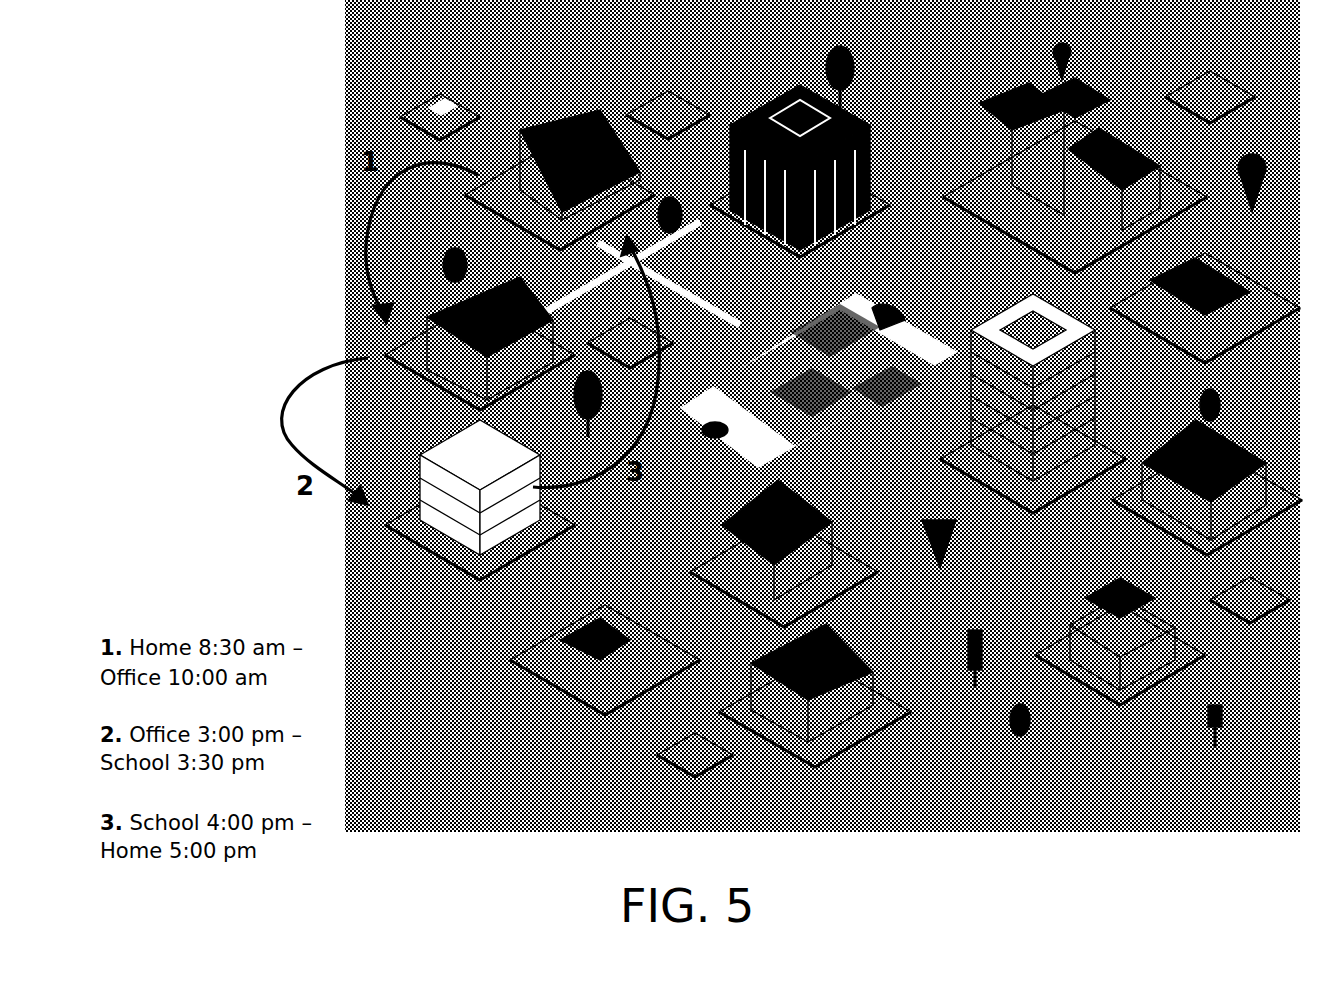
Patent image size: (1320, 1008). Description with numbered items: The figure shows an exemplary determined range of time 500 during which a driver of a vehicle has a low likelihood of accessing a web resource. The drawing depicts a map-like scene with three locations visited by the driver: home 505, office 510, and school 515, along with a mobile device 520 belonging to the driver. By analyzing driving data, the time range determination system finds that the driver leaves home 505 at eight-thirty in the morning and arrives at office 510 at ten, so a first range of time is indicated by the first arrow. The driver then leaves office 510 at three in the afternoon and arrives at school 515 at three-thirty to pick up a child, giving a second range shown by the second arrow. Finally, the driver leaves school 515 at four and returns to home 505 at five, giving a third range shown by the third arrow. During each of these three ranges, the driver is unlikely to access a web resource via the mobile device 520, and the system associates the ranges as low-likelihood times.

The determined exemplary range of time 500 is at (238, 196).
The home 505 is at (516, 163).
The office 510 is at (428, 347).
The school 515 is at (460, 518).
The mobile device 520 is at (838, 412).